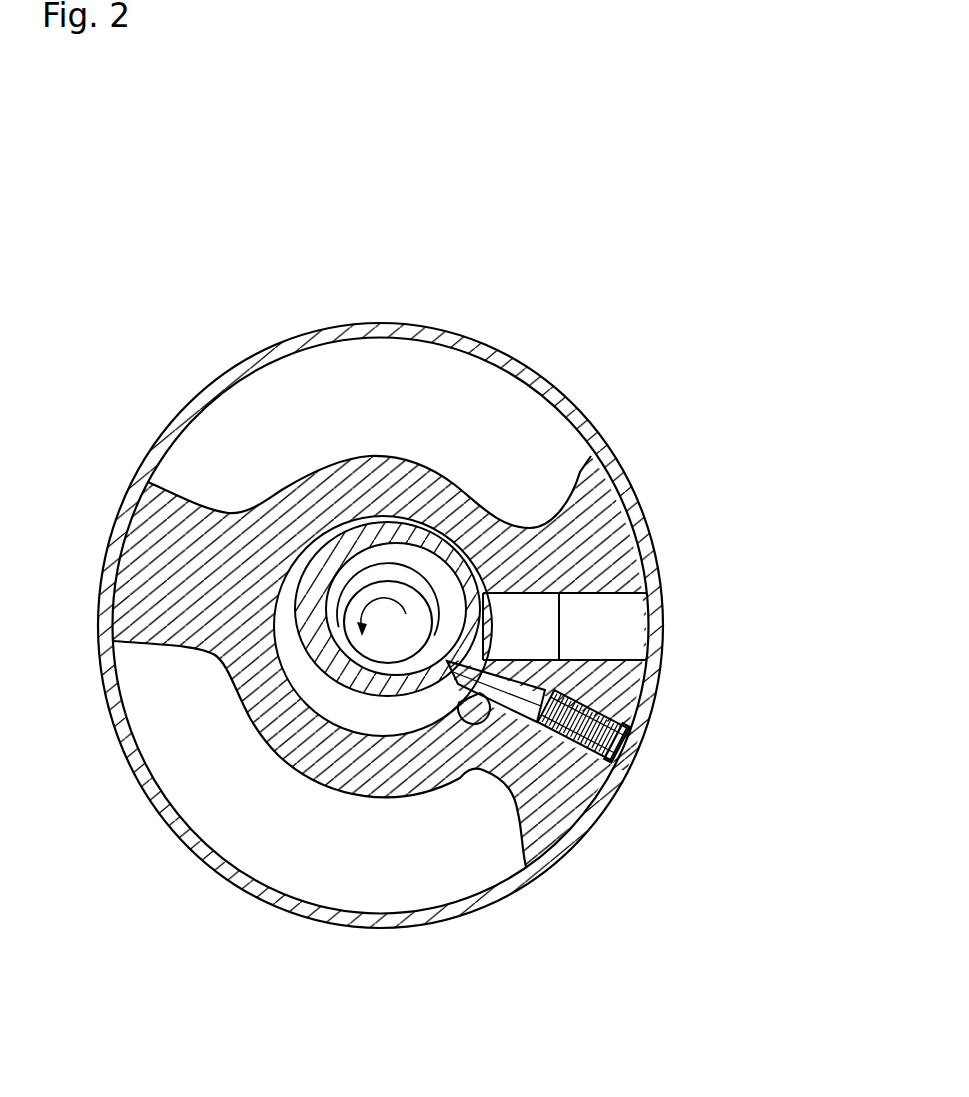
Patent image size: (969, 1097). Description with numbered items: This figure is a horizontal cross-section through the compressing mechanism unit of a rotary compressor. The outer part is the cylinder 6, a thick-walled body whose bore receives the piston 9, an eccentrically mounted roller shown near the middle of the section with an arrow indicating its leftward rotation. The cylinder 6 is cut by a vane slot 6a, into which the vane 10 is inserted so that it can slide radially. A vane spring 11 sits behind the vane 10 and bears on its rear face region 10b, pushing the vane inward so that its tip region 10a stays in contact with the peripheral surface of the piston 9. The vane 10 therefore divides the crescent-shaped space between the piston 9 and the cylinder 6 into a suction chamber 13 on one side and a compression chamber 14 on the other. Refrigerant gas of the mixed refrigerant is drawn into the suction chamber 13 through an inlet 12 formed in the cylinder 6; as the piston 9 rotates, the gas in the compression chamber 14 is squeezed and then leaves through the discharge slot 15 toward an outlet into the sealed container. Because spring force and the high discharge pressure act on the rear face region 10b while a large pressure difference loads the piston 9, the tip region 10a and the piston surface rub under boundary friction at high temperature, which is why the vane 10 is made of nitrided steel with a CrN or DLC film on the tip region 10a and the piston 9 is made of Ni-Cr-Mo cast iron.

The cylinder 6 is at (622, 462).
The vane slot 6a is at (505, 738).
The piston 9 is at (375, 530).
The vane 10 is at (570, 632).
The tip region 10a is at (462, 722).
The rear face region 10b is at (643, 715).
The vane spring 11 is at (643, 740).
The inlet 12 is at (590, 613).
The suction chamber 13 is at (482, 593).
The compression chamber 14 is at (330, 698).
The discharge slot 15 is at (476, 772).